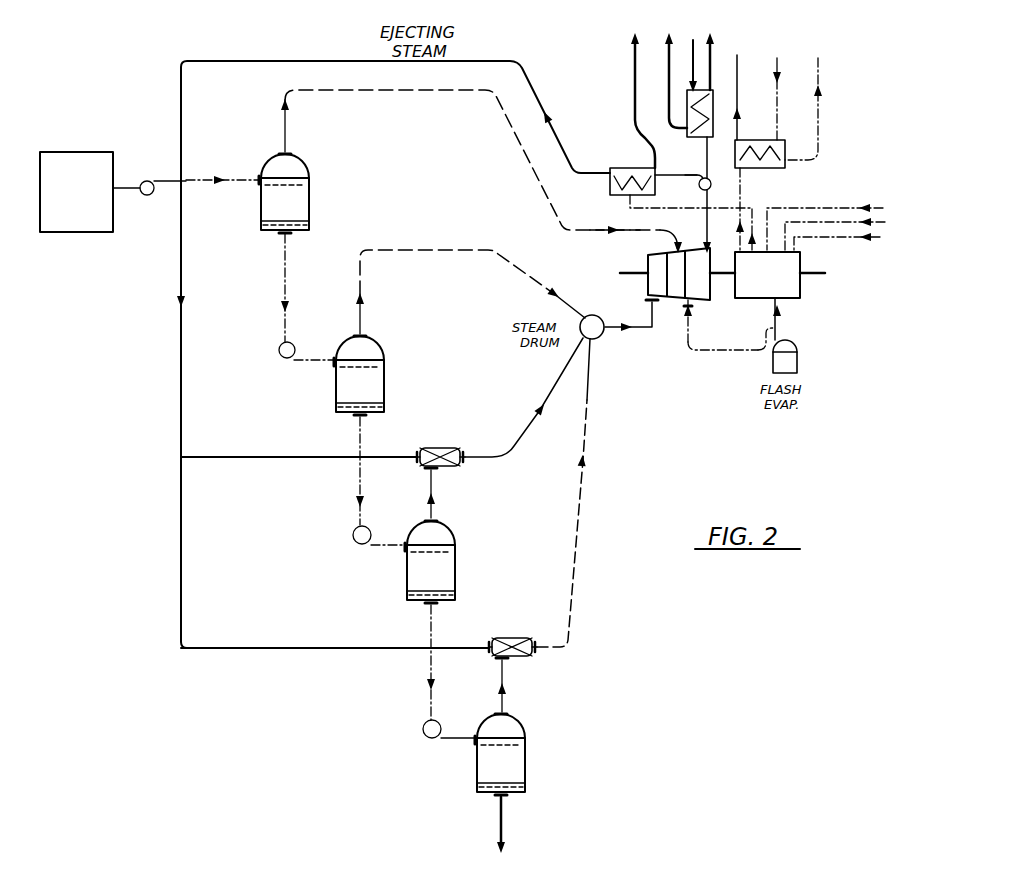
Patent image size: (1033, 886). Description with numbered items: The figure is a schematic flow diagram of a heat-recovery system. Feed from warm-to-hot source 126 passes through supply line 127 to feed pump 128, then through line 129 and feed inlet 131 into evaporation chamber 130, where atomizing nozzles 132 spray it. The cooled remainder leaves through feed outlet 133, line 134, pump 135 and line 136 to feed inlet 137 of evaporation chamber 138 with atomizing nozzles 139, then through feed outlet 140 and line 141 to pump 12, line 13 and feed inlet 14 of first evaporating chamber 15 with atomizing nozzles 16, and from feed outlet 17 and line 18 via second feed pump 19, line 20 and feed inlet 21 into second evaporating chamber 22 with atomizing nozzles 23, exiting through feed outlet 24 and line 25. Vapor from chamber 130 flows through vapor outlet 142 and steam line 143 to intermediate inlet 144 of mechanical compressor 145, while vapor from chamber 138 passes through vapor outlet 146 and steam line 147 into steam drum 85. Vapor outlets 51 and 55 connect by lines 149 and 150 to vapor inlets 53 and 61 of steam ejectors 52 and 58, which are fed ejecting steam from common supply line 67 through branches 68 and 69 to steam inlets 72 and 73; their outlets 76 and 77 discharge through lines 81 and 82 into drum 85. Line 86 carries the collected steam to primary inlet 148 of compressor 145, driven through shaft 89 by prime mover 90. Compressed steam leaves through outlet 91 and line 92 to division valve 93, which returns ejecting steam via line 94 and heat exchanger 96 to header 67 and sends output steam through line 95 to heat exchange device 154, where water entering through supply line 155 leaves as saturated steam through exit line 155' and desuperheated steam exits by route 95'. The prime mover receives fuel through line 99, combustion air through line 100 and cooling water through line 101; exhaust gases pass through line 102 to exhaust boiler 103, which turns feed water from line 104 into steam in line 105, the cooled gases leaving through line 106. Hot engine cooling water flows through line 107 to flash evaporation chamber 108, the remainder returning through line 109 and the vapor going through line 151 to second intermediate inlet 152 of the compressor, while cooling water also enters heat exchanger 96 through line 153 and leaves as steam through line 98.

The pump 12 is at (353, 536).
The line 13 is at (380, 546).
The feed inlet 14 is at (406, 543).
The first evaporating chamber 15 is at (457, 590).
The atomizing nozzles 16 is at (455, 543).
The feed outlet 17 is at (426, 604).
The line 18 is at (427, 660).
The second feed pump 19 is at (424, 727).
The line 20 is at (445, 745).
The feed inlet 21 is at (476, 732).
The second evaporating chamber 22 is at (527, 772).
The atomizing nozzles 23 is at (525, 740).
The feed outlet 24 is at (494, 800).
The line 25 is at (508, 838).
The vapor outlet 51 is at (440, 520).
The steam ejector 52 is at (440, 446).
The vapor inlet 53 is at (436, 467).
The vapor outlet 55 is at (510, 715).
The steam ejector 58 is at (510, 637).
The vapor inlet 61 is at (506, 658).
The common steam supply line 67 is at (330, 60).
The branch 68 is at (260, 458).
The branch 69 is at (272, 649).
The steam inlet 72 is at (418, 455).
The steam inlet 73 is at (488, 650).
The outlet 76 is at (468, 452).
The outlet 77 is at (540, 650).
The line 81 is at (557, 385).
The line 82 is at (581, 520).
The first-pressure steam drum 85 is at (578, 393).
The line 86 is at (651, 345).
The shaft 89 is at (692, 318).
The prime mover 90 is at (800, 292).
The outlet 91 is at (706, 240).
The line 92 is at (722, 226).
The division valve 93 is at (699, 183).
The line 94 is at (696, 172).
The line 95 is at (716, 187).
The route 95' is at (724, 47).
The heat exchanger 96 is at (626, 168).
The line 98 is at (634, 58).
The line 99 is at (866, 206).
The line 100 is at (872, 224).
The line 101 is at (860, 238).
The line 102 is at (743, 183).
The exhaust boiler 103 is at (786, 166).
The line 104 is at (778, 62).
The line 105 is at (738, 60).
The line 106 is at (820, 80).
The line 107 is at (764, 346).
The flash evaporation chamber 108 is at (792, 370).
The line 109 is at (790, 318).
The warm-to-hot source 126 is at (75, 152).
The supply line 127 is at (128, 190).
The feed pump 128 is at (152, 181).
The line 129 is at (205, 178).
The evaporation chamber 130 is at (309, 205).
The feed inlet 131 is at (260, 198).
The atomizing nozzles 132 is at (303, 180).
The feed outlet 133 is at (279, 234).
The conduit 134 is at (280, 298).
The pump 135 is at (279, 356).
The line 136 is at (300, 361).
The feed inlet 137 is at (336, 357).
The evaporation chamber 138 is at (384, 345).
The atomizing nozzles 139 is at (386, 363).
The feed outlet 140 is at (355, 414).
The line 141 is at (356, 500).
The vapor outlet 142 is at (291, 155).
The steam line 143 is at (411, 92).
The intermediate inlet 144 is at (668, 232).
The mechanical compressor 145 is at (647, 265).
The vapor outlet 146 is at (366, 335).
The steam line 147 is at (430, 249).
The primary inlet 148 is at (650, 302).
The line 149 is at (428, 492).
The line 150 is at (508, 690).
The line 151 is at (706, 352).
The compressor outlet 152 is at (684, 320).
The line 153 is at (616, 196).
The heat exchange device 154 is at (693, 138).
The supply line 155 is at (682, 50).
The exit line 155' is at (647, 67).